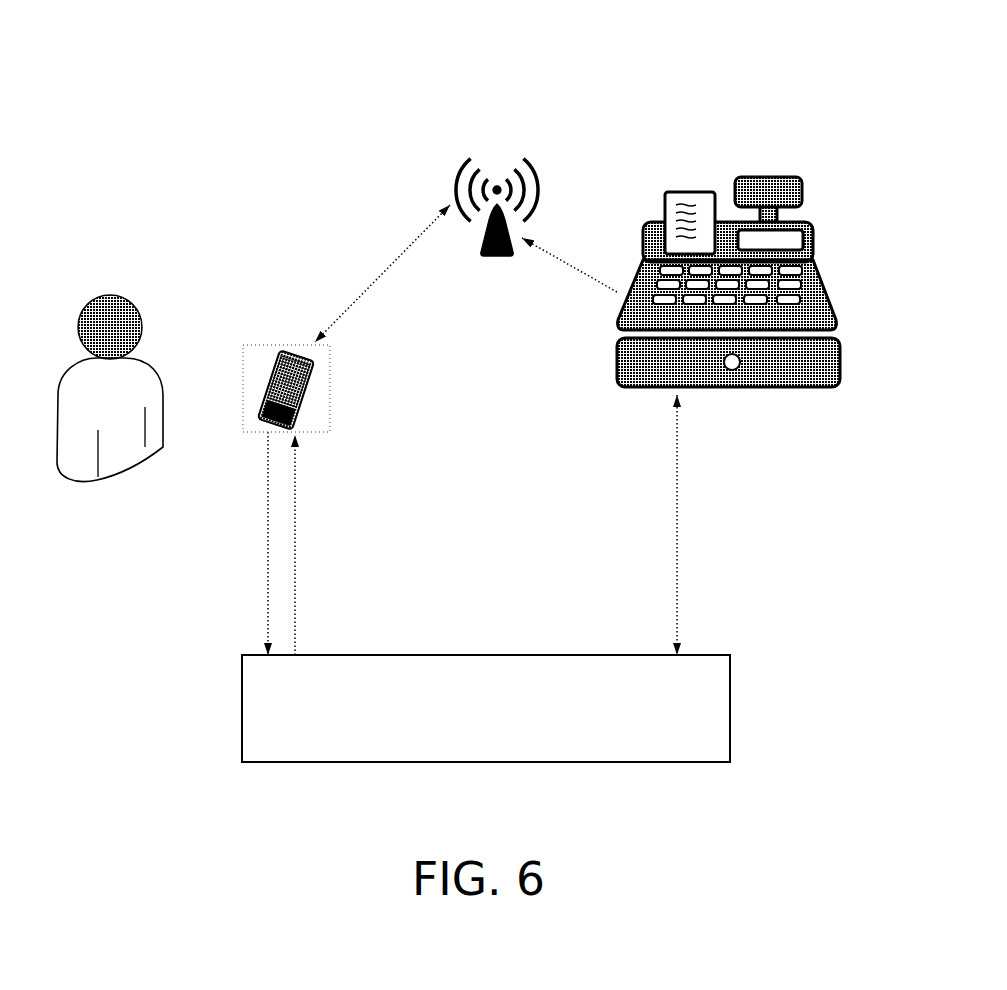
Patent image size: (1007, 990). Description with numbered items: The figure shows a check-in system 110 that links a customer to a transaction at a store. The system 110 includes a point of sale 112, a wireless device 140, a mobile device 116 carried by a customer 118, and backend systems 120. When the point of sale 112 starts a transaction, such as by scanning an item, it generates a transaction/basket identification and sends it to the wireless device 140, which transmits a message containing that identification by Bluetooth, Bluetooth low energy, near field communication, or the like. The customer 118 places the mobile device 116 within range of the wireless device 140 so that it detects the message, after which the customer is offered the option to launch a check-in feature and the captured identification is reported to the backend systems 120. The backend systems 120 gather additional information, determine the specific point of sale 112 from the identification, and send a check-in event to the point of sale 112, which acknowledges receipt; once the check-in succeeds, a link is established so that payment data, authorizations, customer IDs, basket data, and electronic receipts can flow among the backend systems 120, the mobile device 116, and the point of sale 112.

The check-in system 110 is at (410, 70).
The point of sale 112 is at (757, 177).
The mobile device 116 is at (283, 350).
The user 118 is at (122, 307).
The backend systems 120 is at (284, 752).
The wireless device 140 is at (497, 184).